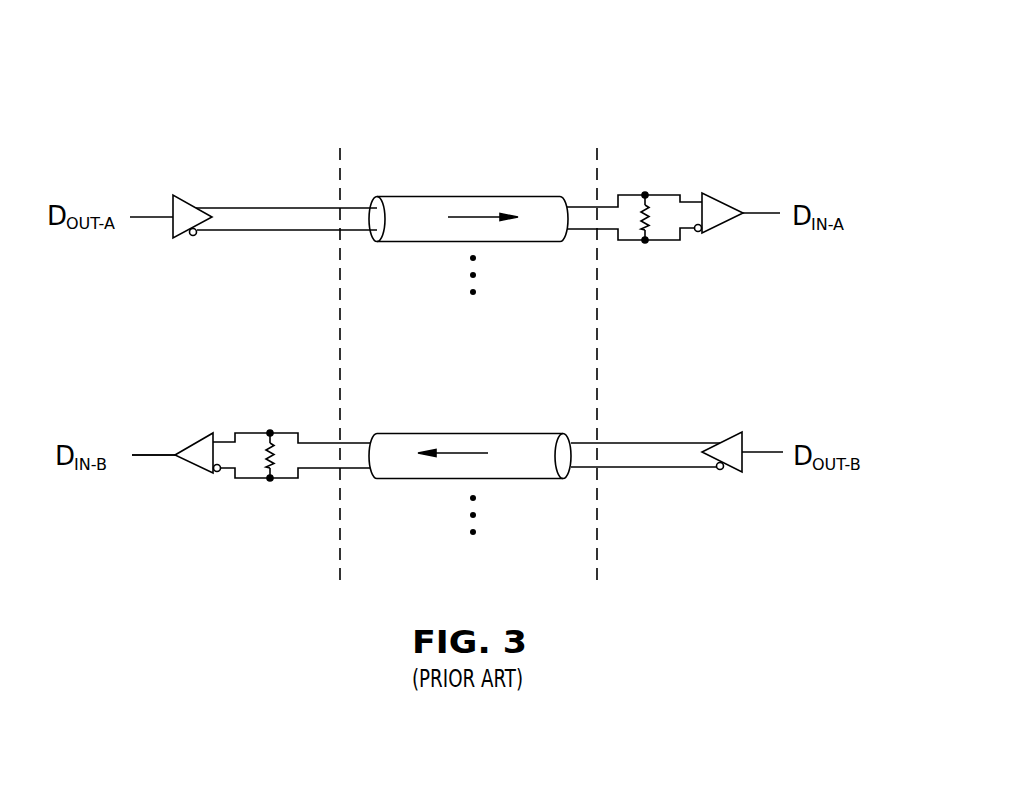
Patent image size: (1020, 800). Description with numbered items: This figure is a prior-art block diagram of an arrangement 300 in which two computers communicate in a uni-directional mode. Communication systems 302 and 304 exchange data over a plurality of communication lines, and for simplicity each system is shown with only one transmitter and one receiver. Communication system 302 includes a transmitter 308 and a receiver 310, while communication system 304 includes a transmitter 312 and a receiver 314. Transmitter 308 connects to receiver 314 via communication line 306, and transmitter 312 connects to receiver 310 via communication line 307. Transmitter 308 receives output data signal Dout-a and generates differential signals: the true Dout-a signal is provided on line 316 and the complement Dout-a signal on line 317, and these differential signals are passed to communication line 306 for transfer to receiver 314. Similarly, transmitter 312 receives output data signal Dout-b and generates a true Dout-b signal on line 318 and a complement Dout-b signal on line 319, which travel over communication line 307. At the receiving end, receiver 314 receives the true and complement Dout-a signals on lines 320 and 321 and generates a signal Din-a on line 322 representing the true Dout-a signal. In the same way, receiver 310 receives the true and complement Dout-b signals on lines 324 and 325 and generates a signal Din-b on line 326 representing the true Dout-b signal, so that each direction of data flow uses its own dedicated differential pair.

The prior art differential signaling system 300 is at (645, 58).
The communication system 302 is at (146, 170).
The communication system 304 is at (769, 165).
The communication line 306 is at (469, 196).
The communication line 307 is at (469, 434).
The transmitter 308 is at (192, 204).
The receiver 310 is at (193, 444).
The transmitter 312 is at (722, 441).
The receiver 314 is at (724, 203).
The line 316 is at (287, 207).
The line 317 is at (288, 231).
The line 318 is at (632, 442).
The line 319 is at (632, 468).
The line 320 is at (628, 195).
The line 321 is at (628, 240).
The line 322 is at (763, 215).
The line 324 is at (316, 442).
The line 325 is at (314, 469).
The line 326 is at (152, 457).